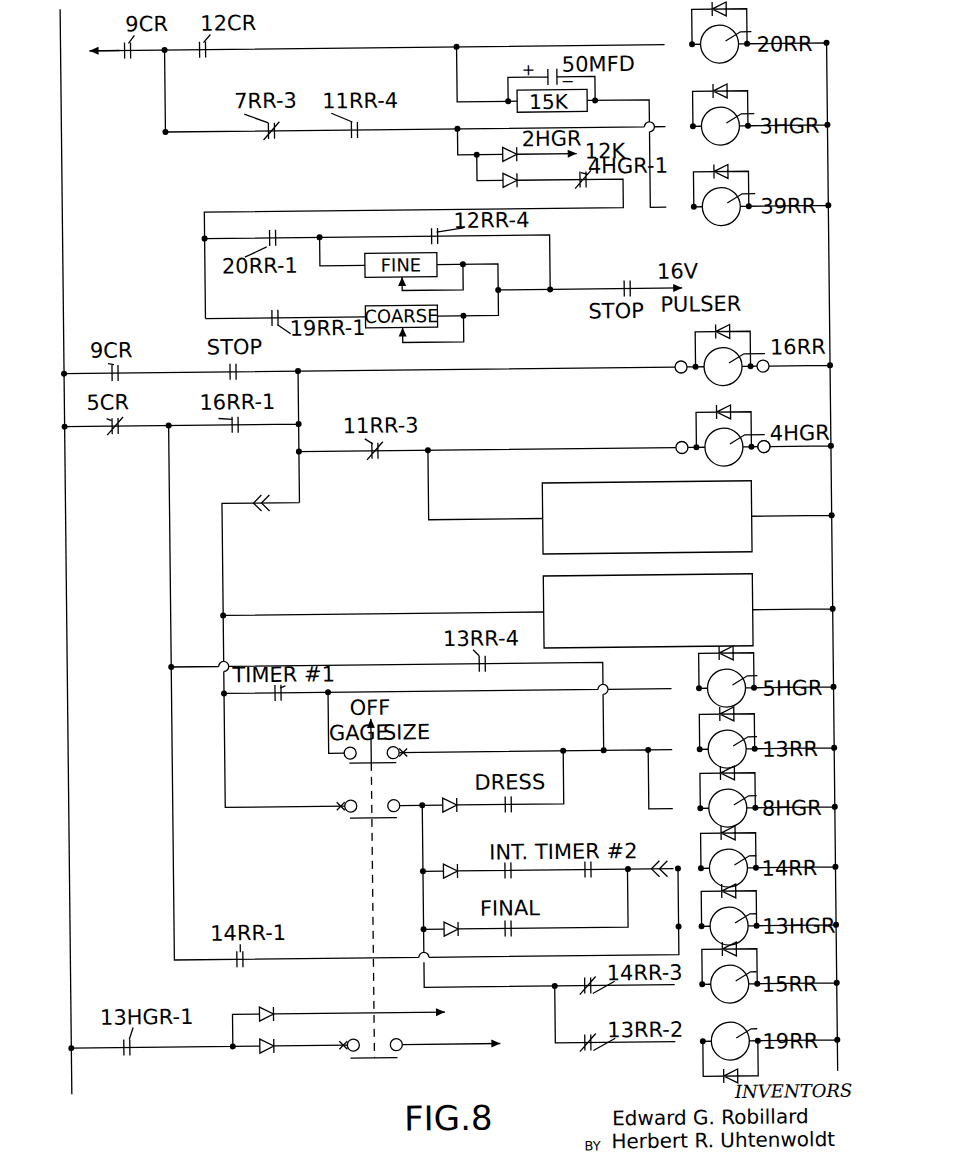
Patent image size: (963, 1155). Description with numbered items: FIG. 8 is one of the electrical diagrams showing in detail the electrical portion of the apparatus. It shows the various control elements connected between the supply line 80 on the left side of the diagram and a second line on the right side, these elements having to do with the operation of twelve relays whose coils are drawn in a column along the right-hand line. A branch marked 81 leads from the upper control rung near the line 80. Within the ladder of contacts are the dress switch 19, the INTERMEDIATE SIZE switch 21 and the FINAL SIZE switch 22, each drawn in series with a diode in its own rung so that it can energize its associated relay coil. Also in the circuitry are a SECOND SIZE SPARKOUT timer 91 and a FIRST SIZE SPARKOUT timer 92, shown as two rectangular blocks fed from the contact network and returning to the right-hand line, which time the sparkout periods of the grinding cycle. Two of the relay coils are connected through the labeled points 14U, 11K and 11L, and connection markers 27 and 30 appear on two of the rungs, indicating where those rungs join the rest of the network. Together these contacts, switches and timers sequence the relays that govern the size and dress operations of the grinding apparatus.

The line 80 is at (66, 120).
The control line 81 is at (97, 40).
The connector 27 is at (256, 492).
The connector 30 is at (660, 856).
The SECOND SIZE SPARKOUT timer 91 is at (548, 536).
The FIRST SIZE SPARKOUT timer 92 is at (545, 580).
The dress switch 19 is at (505, 808).
The INTERMEDIATE SIZE switch 21 is at (500, 876).
The FINAL SIZE switch 22 is at (505, 934).
The terminal 14U is at (665, 351).
The terminal 11K is at (668, 433).
The terminal 11L is at (787, 456).